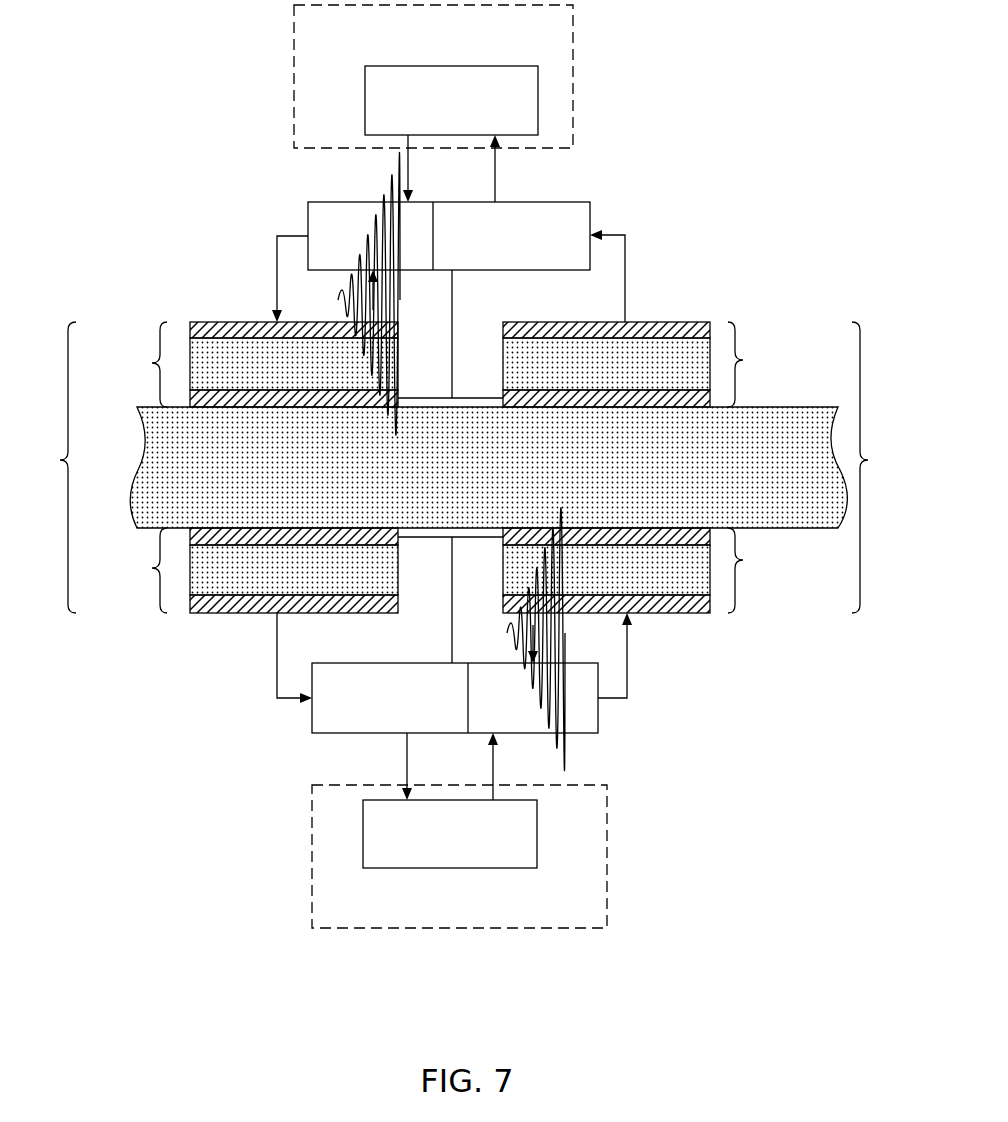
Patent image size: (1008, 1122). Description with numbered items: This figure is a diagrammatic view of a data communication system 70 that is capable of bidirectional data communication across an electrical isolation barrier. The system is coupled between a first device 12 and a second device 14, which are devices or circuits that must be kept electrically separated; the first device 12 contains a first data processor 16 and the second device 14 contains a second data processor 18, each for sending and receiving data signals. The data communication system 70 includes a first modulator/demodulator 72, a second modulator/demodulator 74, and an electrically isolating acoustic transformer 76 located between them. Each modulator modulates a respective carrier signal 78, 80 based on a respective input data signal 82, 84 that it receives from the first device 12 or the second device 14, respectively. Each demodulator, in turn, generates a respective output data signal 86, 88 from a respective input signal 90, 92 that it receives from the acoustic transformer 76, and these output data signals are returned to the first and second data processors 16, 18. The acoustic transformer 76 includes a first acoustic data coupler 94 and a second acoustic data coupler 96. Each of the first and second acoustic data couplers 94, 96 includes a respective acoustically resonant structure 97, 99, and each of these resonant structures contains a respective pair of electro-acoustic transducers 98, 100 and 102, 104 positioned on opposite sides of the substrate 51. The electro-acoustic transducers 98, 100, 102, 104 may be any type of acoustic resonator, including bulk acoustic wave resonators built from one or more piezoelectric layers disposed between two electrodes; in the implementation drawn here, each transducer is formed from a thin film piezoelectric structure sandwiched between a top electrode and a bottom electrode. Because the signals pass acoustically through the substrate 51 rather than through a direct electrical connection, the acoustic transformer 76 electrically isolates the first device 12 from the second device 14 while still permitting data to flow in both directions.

The first device 12 is at (573, 75).
The second device 14 is at (312, 855).
The first data processor 16 is at (365, 98).
The second data processor 18 is at (537, 835).
The substrate 51 is at (473, 478).
The data communication system 70 is at (148, 150).
The first modulator/demodulator 72 is at (307, 217).
The second modulator/demodulator 74 is at (311, 728).
The electrically isolating acoustic transformer 76 is at (861, 253).
The carrier signal 78 is at (338, 302).
The carrier signal 80 is at (568, 633).
The input data signal 82 is at (408, 182).
The input data signal 84 is at (493, 765).
The output data signal 86 is at (495, 182).
The output data signal 88 is at (407, 773).
The input signal 90 is at (627, 248).
The input signal 92 is at (275, 653).
The first acoustic data coupler 94 is at (688, 276).
The second acoustic data coupler 96 is at (214, 279).
The acoustically resonant structure 97 is at (863, 383).
The electro-acoustic transducer 98 is at (738, 343).
The acoustically resonant structure 99 is at (68, 380).
The electro-acoustic transducer 100 is at (738, 577).
The electro-acoustic transducer 102 is at (152, 345).
The electro-acoustic transducer 104 is at (152, 597).